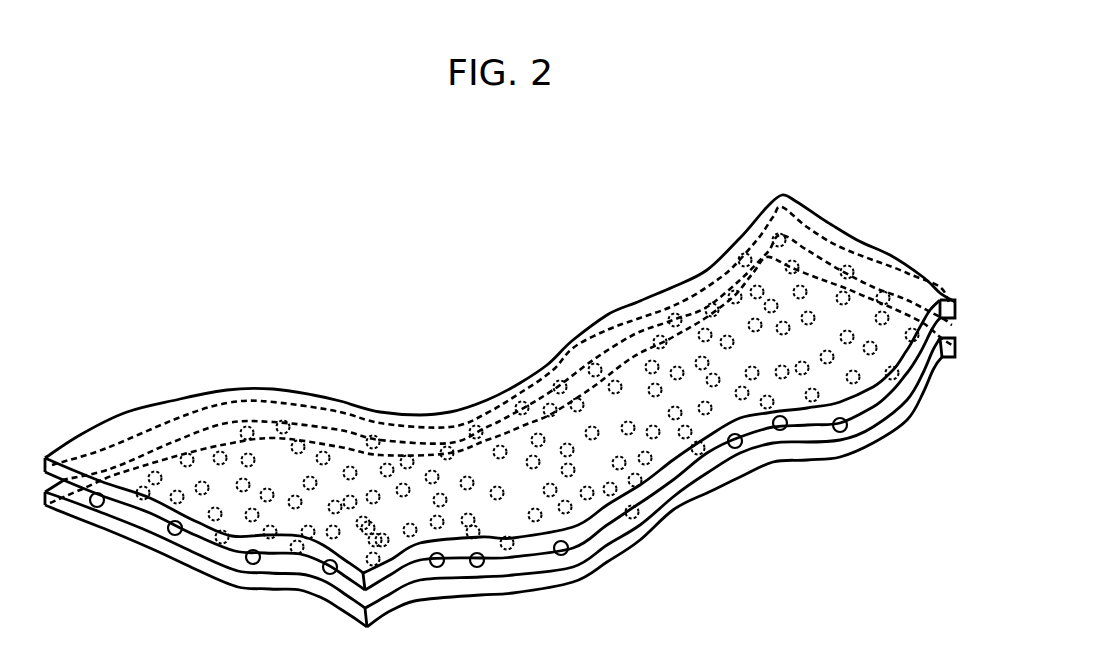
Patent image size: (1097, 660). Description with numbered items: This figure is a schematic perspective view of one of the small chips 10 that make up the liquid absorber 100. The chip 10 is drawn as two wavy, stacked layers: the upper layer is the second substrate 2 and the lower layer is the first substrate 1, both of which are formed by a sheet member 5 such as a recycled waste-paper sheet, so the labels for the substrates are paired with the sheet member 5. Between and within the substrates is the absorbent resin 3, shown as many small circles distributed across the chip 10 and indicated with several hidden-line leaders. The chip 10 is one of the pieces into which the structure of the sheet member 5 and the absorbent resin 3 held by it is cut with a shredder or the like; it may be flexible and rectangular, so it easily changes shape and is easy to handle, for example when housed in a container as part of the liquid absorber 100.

The liquid absorber 100 is at (805, 121).
The chip 10 is at (800, 192).
The first substrate 1 is at (255, 581).
The second substrate 2 is at (110, 440).
The sheet member 5 is at (500, 411).
The absorbent resin 3 is at (187, 452).